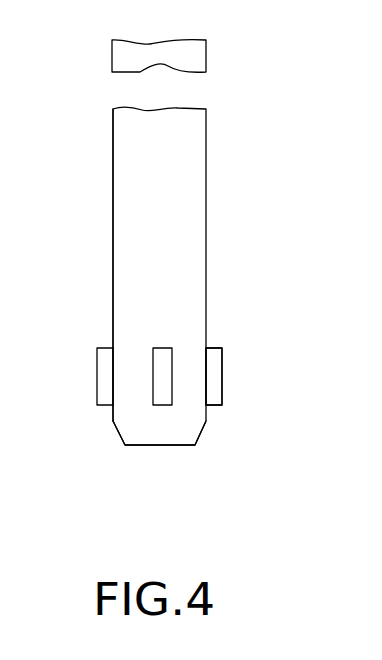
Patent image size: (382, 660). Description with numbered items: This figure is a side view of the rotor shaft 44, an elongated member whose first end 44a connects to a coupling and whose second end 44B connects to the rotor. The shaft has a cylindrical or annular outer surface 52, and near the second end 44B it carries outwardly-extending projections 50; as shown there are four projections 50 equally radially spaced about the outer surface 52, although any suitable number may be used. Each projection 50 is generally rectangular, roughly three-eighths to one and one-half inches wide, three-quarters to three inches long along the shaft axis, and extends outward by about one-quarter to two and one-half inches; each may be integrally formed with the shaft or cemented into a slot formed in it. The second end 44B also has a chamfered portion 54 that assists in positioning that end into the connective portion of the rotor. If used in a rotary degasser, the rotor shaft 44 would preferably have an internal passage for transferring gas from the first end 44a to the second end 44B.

The rotor shaft 44 is at (212, 197).
The first end 44a is at (220, 53).
The second end 44B is at (245, 366).
The outwardly-extending projection 50 is at (97, 382).
The outer surface 52 is at (113, 303).
The chamfered portion 54 is at (117, 433).